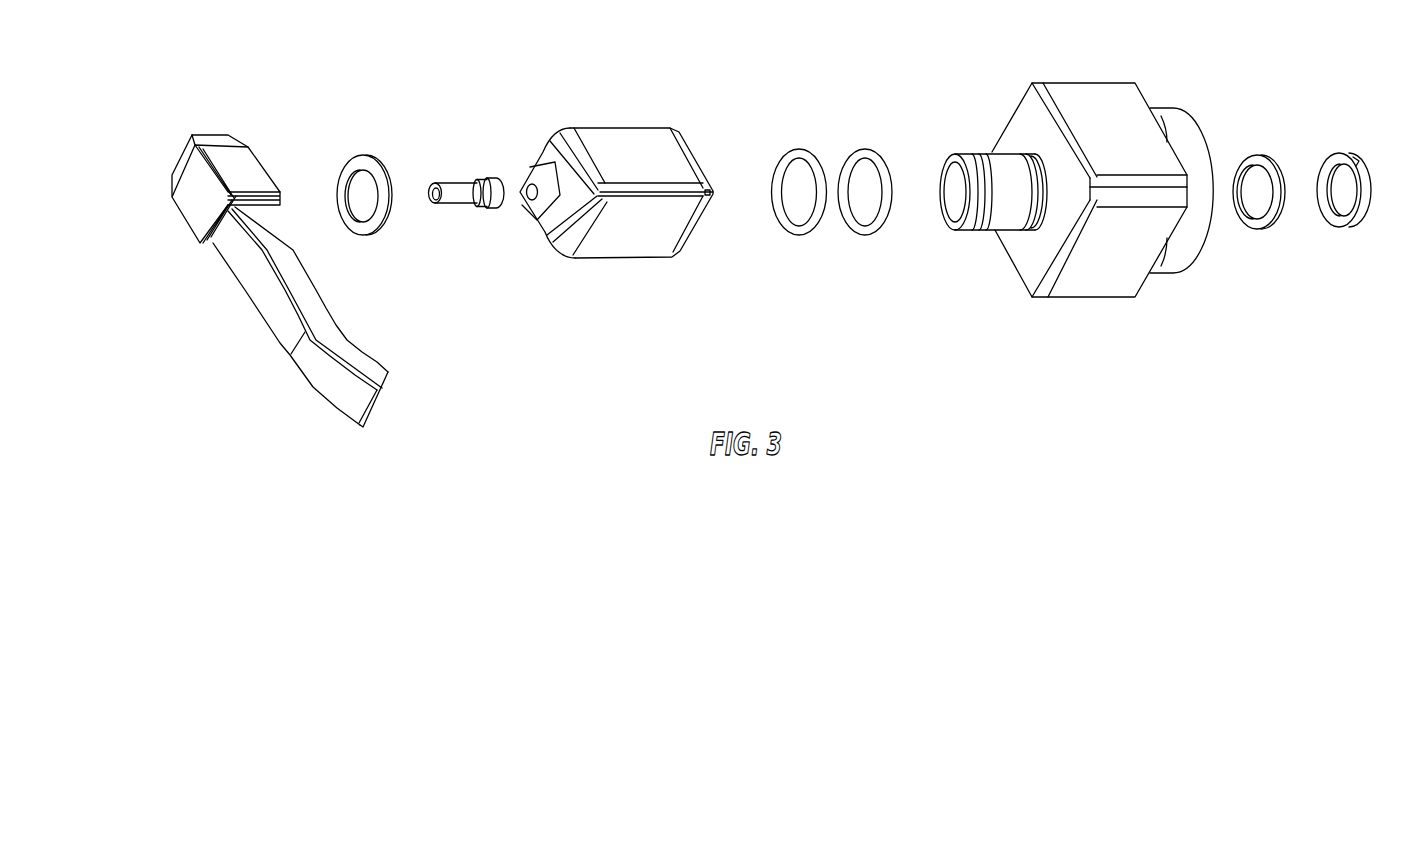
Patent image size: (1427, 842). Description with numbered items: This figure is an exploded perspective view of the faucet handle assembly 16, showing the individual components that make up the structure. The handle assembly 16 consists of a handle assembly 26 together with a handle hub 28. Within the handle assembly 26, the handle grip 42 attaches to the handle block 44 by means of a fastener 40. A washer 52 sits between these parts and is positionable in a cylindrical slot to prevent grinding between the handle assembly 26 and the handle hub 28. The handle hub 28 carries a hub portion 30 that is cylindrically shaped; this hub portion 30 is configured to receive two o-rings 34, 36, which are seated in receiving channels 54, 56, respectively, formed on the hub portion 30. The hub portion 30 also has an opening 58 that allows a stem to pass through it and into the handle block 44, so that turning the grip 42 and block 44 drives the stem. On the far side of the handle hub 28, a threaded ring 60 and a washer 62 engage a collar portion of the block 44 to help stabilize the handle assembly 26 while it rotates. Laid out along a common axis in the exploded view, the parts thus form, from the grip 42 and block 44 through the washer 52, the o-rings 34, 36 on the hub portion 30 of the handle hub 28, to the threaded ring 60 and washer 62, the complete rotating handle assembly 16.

The handle assembly 16 is at (870, 322).
The handle assembly 26 is at (484, 87).
The handle hub 28 is at (983, 58).
The hub portion 30 is at (1008, 213).
The o-ring 34 is at (798, 148).
The o-ring 36 is at (863, 148).
The fastener 40 is at (458, 182).
The handle grip 42 is at (188, 153).
The handle block 44 is at (650, 127).
The washer 52 is at (361, 154).
The receiving channel 54 is at (973, 152).
The receiving channel 56 is at (1027, 152).
The opening 58 is at (961, 191).
The threaded ring 60 is at (1362, 163).
The washer 62 is at (1253, 155).